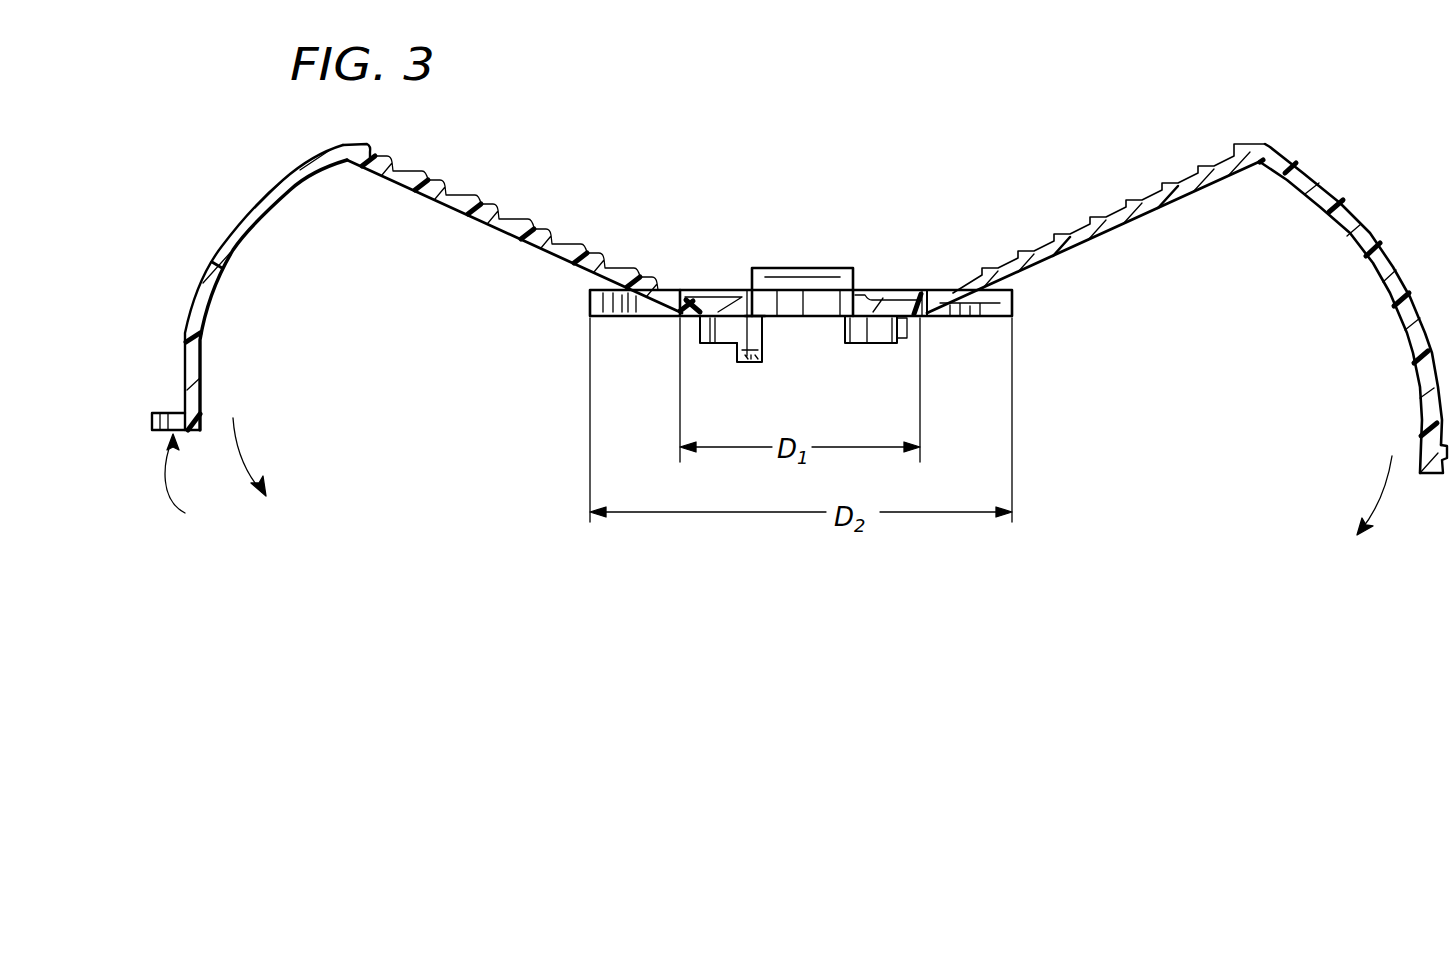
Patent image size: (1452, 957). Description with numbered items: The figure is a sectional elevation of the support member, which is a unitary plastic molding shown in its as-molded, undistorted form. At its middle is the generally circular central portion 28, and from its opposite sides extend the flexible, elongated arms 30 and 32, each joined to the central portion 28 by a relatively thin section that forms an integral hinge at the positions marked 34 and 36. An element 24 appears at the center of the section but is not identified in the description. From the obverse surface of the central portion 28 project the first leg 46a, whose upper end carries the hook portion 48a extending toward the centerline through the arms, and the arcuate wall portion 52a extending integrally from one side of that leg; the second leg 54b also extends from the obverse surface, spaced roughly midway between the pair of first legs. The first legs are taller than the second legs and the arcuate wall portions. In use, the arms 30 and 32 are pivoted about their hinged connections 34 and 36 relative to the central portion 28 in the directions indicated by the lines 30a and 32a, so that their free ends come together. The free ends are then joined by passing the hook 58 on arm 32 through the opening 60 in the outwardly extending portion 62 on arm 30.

The central hub 24 is at (797, 285).
The central portion 28 is at (1013, 300).
The arm 30 is at (1390, 275).
The line indicating pivot direction 30a is at (1383, 480).
The arm 32 is at (268, 207).
The line indicating pivot direction 32a is at (250, 447).
The integral hinge 34 is at (678, 318).
The integral hinge 36 is at (925, 318).
The first leg 46a is at (755, 320).
The hook portion 48a is at (755, 350).
The arcuate wall portion 52a is at (726, 330).
The second leg 54b is at (875, 345).
The hook 58 is at (1443, 475).
The opening 60 is at (190, 480).
The outwardly extending portion 62 is at (152, 422).